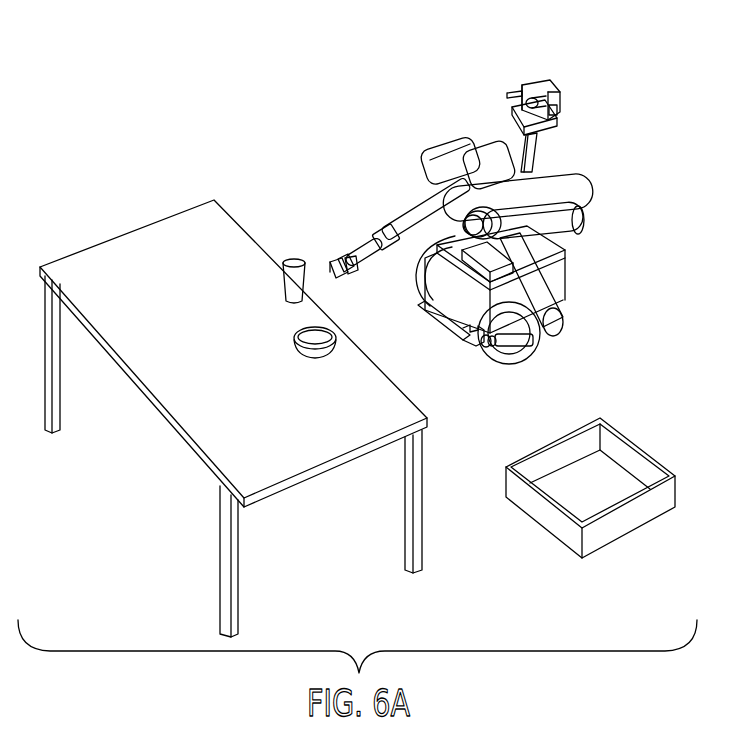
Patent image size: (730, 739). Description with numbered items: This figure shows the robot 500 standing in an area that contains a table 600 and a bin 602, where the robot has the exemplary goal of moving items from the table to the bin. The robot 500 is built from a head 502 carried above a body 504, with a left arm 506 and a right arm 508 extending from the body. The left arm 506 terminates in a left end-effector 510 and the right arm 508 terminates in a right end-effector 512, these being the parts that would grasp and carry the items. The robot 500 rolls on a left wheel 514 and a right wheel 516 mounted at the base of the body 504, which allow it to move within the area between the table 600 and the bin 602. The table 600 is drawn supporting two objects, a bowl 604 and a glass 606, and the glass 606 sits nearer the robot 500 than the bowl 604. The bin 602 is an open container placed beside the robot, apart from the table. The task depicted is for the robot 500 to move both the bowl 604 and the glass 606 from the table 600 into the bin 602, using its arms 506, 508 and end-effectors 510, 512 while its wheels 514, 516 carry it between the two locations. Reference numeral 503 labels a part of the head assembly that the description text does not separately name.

The robot 500 is at (580, 68).
The head 502 is at (540, 85).
The camera mount 503 is at (512, 107).
The body 504 is at (443, 308).
The left arm 506 is at (365, 248).
The right arm 508 is at (533, 342).
The left end-effector 510 is at (350, 280).
The right end-effector 512 is at (470, 348).
The left wheel 514 is at (418, 273).
The right wheel 516 is at (498, 360).
The table 600 is at (143, 225).
The bin 602 is at (638, 443).
The bowl 604 is at (295, 342).
The glass 606 is at (297, 258).